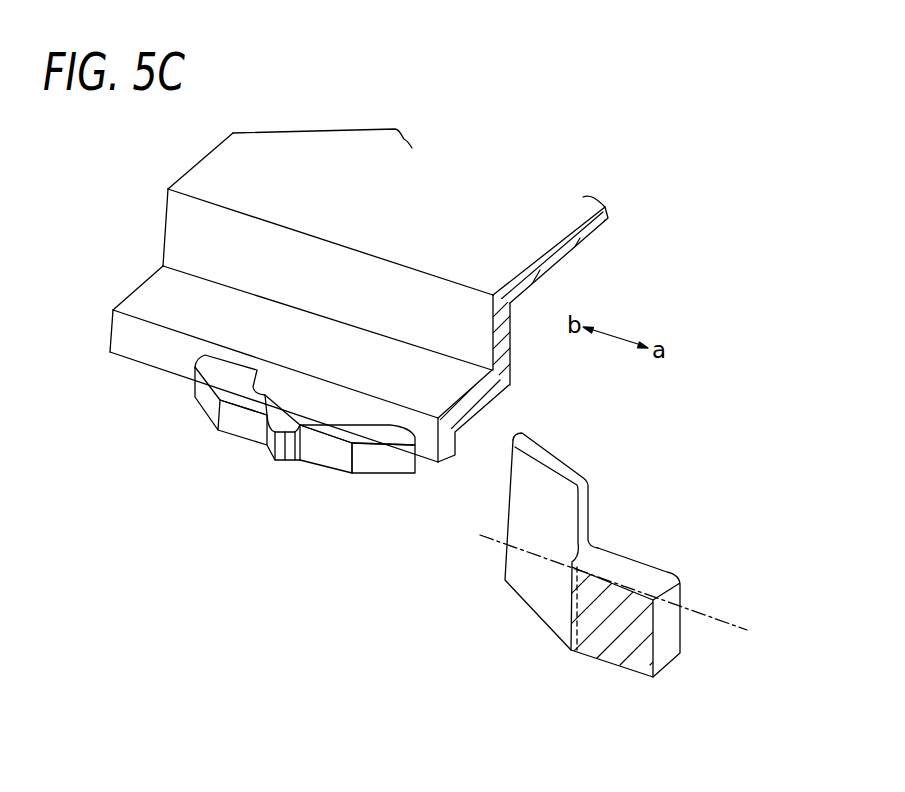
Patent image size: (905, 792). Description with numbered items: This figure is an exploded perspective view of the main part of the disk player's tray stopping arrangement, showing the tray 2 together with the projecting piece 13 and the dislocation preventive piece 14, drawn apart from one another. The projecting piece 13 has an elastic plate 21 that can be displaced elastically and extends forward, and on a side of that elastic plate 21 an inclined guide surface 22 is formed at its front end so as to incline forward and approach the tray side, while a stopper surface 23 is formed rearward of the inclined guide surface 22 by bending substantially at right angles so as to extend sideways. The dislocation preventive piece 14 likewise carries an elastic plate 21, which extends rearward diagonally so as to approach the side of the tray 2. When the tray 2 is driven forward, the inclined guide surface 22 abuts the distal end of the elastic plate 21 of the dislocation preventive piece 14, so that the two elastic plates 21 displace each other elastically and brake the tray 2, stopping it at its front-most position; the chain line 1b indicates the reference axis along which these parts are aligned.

The tray 2 is at (198, 241).
The elastic plate 21 is at (322, 422).
The projecting piece 13 is at (285, 440).
The inclined guide surface 22 is at (378, 457).
The stopper surface 23 is at (297, 453).
The dislocation preventive piece 14 is at (623, 546).
The axis line of cassette (1) 1b is at (700, 613).